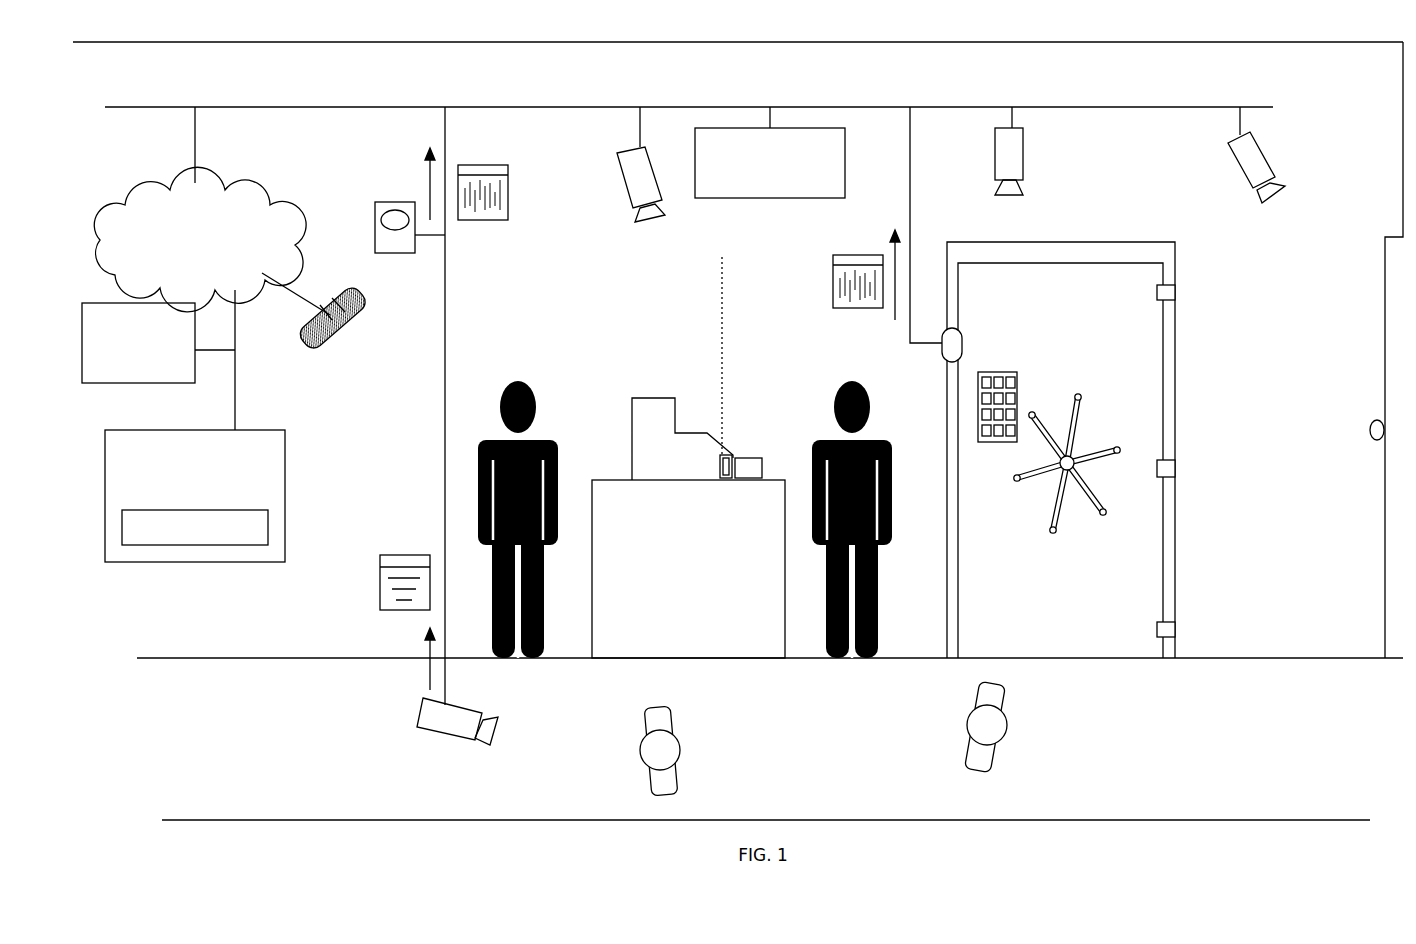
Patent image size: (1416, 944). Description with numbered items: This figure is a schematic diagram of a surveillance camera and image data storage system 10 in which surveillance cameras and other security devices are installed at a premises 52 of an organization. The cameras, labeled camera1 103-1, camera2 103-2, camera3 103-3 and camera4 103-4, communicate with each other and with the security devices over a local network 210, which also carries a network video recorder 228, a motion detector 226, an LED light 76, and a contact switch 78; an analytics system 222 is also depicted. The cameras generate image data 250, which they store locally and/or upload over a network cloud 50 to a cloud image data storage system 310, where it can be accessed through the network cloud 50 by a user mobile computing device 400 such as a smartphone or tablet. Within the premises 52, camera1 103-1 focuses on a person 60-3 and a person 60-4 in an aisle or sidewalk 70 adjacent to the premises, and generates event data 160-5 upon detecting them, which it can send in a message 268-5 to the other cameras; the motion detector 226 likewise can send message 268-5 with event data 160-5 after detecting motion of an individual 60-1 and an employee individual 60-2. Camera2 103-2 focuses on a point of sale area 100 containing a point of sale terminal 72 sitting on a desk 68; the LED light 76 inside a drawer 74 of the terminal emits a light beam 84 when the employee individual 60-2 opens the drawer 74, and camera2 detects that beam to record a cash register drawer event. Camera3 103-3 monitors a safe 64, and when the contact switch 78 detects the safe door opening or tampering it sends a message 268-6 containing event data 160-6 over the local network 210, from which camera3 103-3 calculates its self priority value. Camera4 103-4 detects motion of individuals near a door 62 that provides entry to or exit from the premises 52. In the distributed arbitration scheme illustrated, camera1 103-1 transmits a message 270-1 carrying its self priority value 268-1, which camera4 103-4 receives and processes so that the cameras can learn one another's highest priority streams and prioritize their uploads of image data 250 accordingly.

The surveillance camera and image data storage system 10 is at (228, 682).
The network cloud 50 is at (212, 298).
The premises 52 is at (400, 42).
The individual 60-1 is at (552, 440).
The employee individual 60-2 is at (880, 597).
The person 60-3 is at (647, 738).
The person 60-4 is at (1002, 712).
The door 62 is at (1385, 265).
The safe 64 is at (1060, 285).
The desk 68 is at (625, 625).
The aisle or sidewalk 70 is at (1246, 739).
The point of sale terminal 72 is at (659, 398).
The drawer 74 is at (753, 457).
The LED light 76 is at (720, 465).
The contact switch 78 is at (962, 346).
The light beam 84 is at (718, 317).
The point of sale area 100 is at (598, 270).
The camera1 103-1 is at (417, 723).
The camera2 103-2 is at (621, 176).
The camera3 103-3 is at (1023, 147).
The camera4 103-4 is at (1265, 148).
The event data 160-5 is at (473, 197).
The event data 160-6 is at (860, 287).
The local network 210 is at (590, 107).
The analytics system 222 is at (158, 343).
The motion detector 226 is at (390, 202).
The network video recorder 228 is at (770, 163).
The image data 250 is at (195, 527).
The self priority value 268-1 is at (348, 608).
The message 268-5 is at (471, 165).
The message 268-6 is at (866, 255).
The message 270-1 is at (405, 585).
The cloud image data storage system 310 is at (195, 496).
The user mobile computing device 400 is at (345, 345).